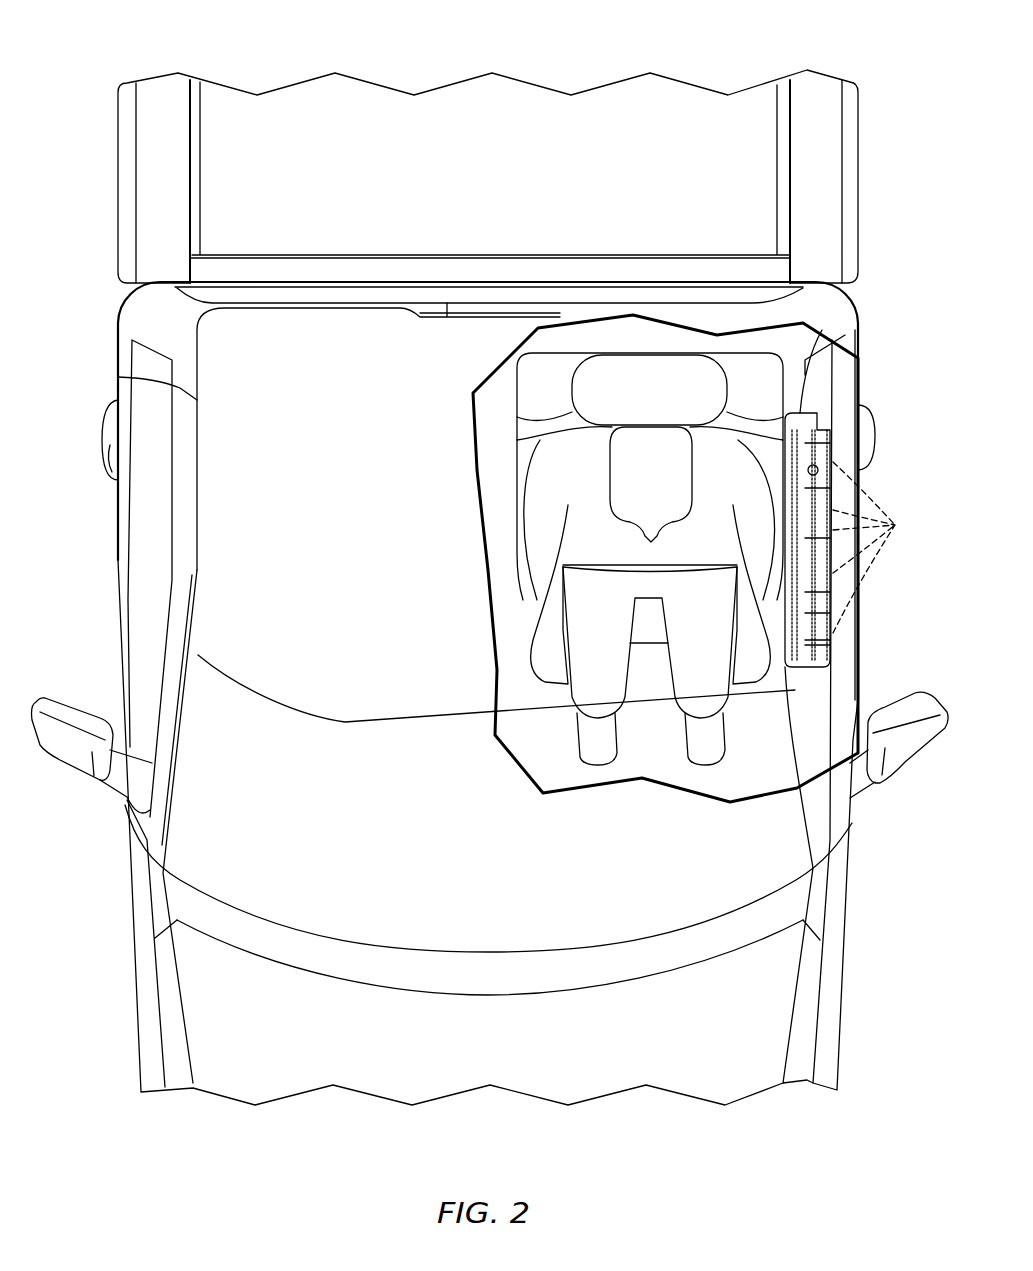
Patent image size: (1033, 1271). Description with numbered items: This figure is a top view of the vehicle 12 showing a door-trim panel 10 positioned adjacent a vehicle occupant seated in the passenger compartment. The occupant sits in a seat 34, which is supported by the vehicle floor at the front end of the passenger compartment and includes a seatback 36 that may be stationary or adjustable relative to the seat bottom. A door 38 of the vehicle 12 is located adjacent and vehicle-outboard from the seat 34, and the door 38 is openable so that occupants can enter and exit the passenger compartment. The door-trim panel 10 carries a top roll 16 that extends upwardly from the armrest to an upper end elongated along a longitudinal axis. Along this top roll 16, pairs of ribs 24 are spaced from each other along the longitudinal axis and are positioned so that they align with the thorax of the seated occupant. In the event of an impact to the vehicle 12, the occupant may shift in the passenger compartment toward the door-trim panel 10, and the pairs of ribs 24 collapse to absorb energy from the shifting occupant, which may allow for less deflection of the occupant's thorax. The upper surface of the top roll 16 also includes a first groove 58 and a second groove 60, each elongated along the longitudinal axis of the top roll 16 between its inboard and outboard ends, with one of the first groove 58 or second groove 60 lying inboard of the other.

The door-trim panel 10 is at (771, 695).
The vehicle 12 is at (845, 50).
The top roll 16 is at (837, 345).
The pairs of ribs 24 is at (894, 525).
The seat 34 is at (777, 352).
The seatback 36 is at (540, 383).
The door 38 is at (843, 383).
The first groove 58 is at (795, 646).
The second groove 60 is at (803, 625).